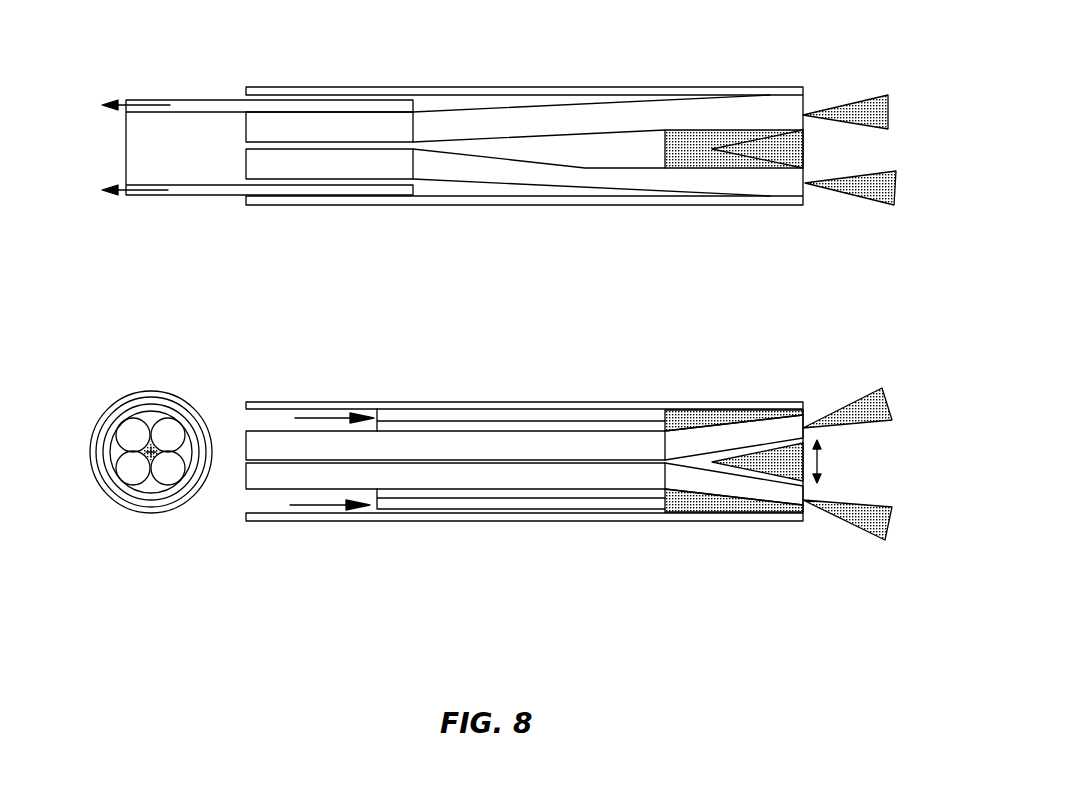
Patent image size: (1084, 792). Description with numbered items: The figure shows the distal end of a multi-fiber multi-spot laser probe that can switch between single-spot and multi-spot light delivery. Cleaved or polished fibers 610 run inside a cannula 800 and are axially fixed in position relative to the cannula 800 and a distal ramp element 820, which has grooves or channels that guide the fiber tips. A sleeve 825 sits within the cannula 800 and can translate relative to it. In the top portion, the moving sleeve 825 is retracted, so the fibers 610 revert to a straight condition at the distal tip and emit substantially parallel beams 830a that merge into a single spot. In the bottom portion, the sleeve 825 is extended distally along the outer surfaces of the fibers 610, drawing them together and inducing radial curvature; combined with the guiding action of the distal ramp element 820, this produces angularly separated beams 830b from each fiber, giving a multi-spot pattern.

The fibers 610 is at (552, 178).
The cannula 800 is at (314, 206).
The distal ramp element 820 is at (773, 150).
The sleeve 825 is at (178, 192).
The substantially parallel beams 830a is at (815, 238).
The angularly separated beams 830b is at (822, 546).